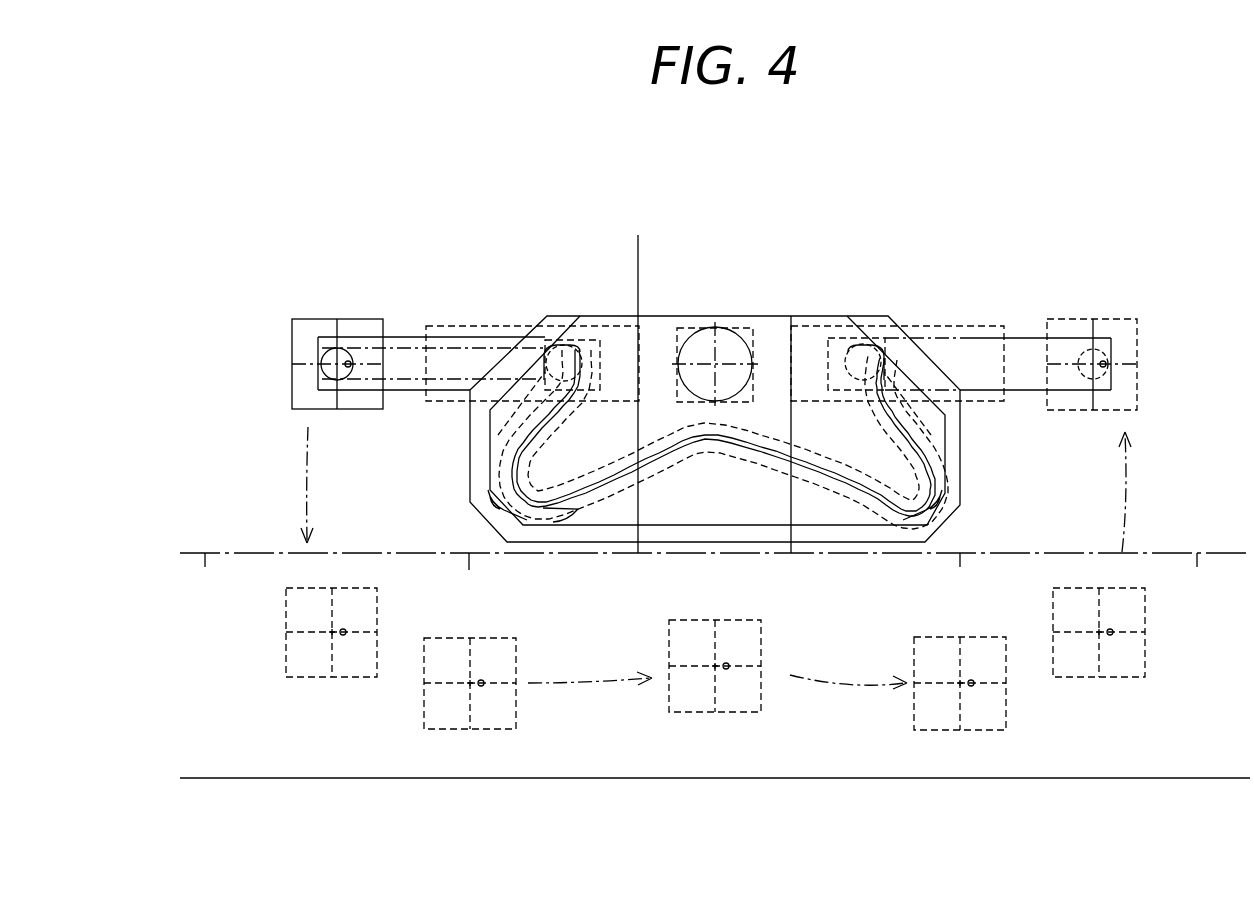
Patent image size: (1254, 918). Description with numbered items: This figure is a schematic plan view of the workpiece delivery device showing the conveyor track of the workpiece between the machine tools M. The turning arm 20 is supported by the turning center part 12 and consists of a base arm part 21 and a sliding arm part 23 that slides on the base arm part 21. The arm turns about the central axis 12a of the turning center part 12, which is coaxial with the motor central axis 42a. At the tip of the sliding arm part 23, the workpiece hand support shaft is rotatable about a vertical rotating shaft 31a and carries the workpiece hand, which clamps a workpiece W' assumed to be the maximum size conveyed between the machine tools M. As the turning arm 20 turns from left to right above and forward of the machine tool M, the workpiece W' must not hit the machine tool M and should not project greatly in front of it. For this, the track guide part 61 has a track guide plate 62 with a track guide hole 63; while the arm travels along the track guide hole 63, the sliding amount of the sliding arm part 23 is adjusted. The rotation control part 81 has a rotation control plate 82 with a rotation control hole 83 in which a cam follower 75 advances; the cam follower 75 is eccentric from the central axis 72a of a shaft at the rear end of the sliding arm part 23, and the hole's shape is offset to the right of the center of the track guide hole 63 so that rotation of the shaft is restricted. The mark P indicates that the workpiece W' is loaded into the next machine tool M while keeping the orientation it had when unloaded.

The turning arm 20 is at (397, 305).
The base arm part 21 is at (500, 327).
The sliding arm part 23 is at (418, 335).
The turning center part 12 is at (740, 350).
The central axis of the turning center part 12a is at (715, 362).
The motor central axis 42a is at (715, 364).
The central axis of the shaft 72a is at (555, 348).
The cam follower 75 is at (584, 350).
The track guide part 61 is at (405, 438).
The track guide plate 62 is at (470, 447).
The track guide hole 63 is at (482, 514).
The rotation control part 81 is at (845, 588).
The rotation control plate 82 is at (770, 515).
The rotation control hole 83 is at (700, 447).
The vertical rotating shaft 31a is at (337, 366).
The workpiece of maximum size W' is at (726, 498).
The mark P is at (349, 360).
The machine tool M is at (228, 545).